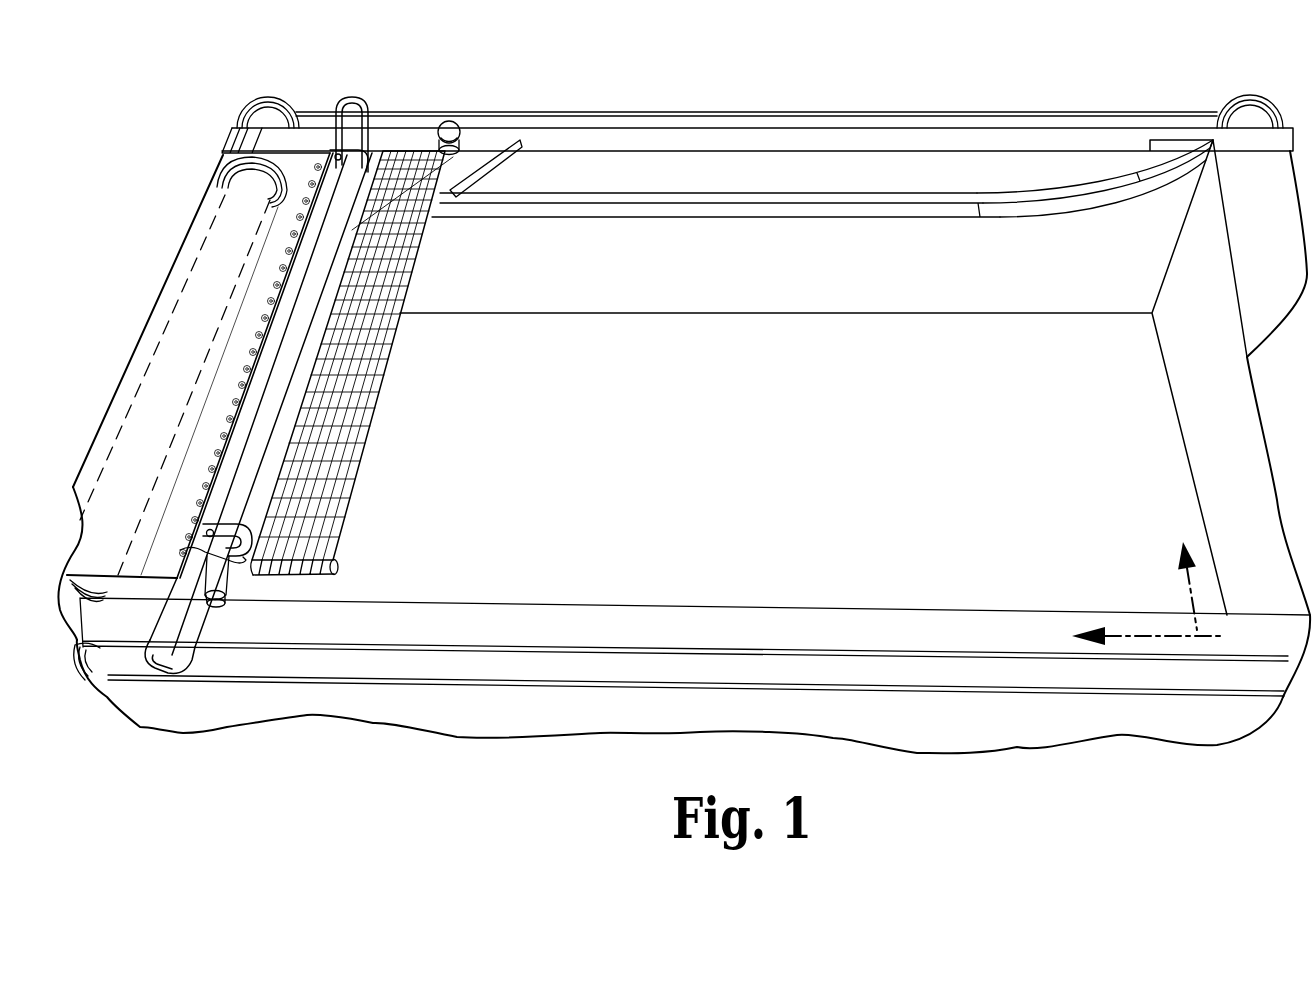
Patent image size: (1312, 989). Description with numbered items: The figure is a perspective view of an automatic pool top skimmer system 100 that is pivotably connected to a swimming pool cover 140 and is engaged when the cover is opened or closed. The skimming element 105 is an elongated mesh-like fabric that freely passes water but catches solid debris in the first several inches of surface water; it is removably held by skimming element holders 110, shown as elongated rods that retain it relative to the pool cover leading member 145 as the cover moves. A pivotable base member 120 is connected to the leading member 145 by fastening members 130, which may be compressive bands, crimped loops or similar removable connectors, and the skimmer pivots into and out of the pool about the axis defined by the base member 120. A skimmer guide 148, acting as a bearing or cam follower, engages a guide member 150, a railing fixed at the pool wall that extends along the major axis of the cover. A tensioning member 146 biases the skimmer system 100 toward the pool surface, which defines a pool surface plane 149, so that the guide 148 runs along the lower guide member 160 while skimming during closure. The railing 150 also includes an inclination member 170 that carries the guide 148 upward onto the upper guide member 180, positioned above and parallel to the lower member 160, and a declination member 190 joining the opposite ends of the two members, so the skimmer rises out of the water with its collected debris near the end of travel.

The automatic pool top skimmer system 100 is at (222, 622).
The skimming element 105 is at (343, 386).
The skimming element holder 110 is at (455, 155).
The pivotable base member 120 is at (308, 302).
The fastening member 130 is at (352, 97).
The pool cover 140 is at (189, 243).
The pool cover leading member 145 is at (190, 630).
The tensioning member 146 is at (338, 155).
The skimmer guide 148 is at (451, 120).
The pool surface plane 149 is at (1205, 652).
The guide member 150 is at (805, 248).
The lower guide member 160 is at (657, 210).
The inclination member 170 is at (1093, 193).
The upper guide member 180 is at (783, 132).
The declination member 190 is at (487, 160).